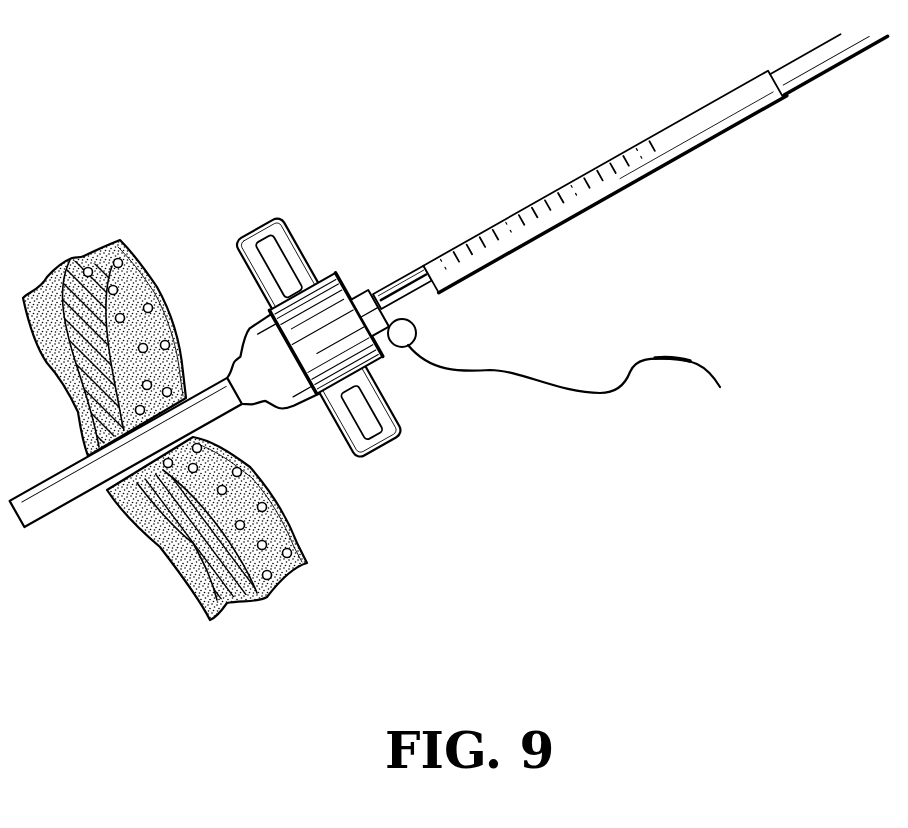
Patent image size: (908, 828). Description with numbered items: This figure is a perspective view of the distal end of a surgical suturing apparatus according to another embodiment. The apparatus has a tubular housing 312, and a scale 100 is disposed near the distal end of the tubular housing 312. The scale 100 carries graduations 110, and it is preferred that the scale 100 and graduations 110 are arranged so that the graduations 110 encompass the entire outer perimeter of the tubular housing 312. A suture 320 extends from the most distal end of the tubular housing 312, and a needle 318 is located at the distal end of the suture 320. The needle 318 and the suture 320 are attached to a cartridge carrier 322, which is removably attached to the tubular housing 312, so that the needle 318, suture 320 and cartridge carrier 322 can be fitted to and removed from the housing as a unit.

The scale 100 is at (612, 188).
The graduations 110 is at (523, 222).
The tubular housing 312 is at (707, 125).
The needle 318 is at (670, 355).
The suture 320 is at (477, 373).
The cartridge carrier 322 is at (393, 273).